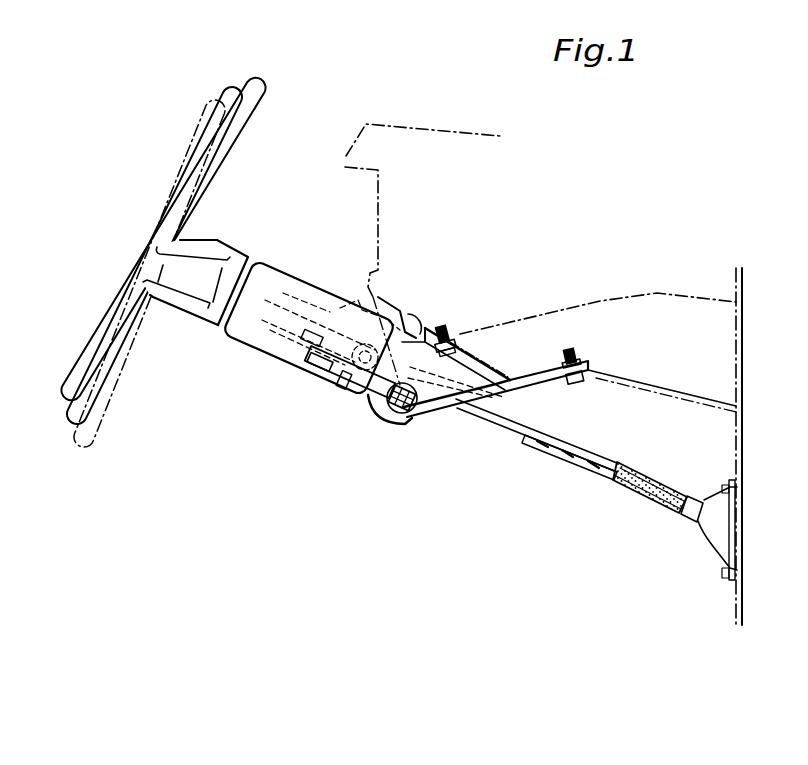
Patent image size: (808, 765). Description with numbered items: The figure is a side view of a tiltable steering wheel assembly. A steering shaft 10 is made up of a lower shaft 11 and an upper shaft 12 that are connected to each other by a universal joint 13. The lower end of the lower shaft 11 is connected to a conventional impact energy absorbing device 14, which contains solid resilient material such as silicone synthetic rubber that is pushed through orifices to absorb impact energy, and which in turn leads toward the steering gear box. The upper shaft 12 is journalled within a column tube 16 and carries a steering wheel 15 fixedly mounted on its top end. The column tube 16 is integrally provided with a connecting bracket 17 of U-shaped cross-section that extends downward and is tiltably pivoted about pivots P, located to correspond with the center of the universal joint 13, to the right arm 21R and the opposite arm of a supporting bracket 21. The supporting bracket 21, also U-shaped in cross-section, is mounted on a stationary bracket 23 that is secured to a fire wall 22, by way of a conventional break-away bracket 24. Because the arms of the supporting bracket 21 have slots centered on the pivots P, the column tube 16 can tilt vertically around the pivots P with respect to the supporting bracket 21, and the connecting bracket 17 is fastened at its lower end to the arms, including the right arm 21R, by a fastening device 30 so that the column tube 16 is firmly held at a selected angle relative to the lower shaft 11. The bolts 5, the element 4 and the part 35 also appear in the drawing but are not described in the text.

The rack / tilt lever 4 is at (306, 347).
The bolt 5 is at (485, 389).
The steering shaft 10 is at (502, 430).
The lower shaft 11 is at (560, 447).
The upper shaft 12 is at (311, 318).
The universal joint 13 is at (401, 317).
The impact energy absorbing device 14 is at (655, 490).
The steering wheel 15 is at (214, 128).
The column tube 16 is at (287, 333).
The connecting bracket 17 is at (375, 304).
The supporting bracket 21 is at (474, 378).
The right arm of supporting bracket 21R is at (410, 414).
The fire wall 22 is at (740, 443).
The stationary bracket 23 is at (607, 311).
The break-away bracket 24 is at (547, 379).
The fastening device 30 is at (420, 421).
The pawl 35 is at (317, 372).
The pivot P is at (342, 378).